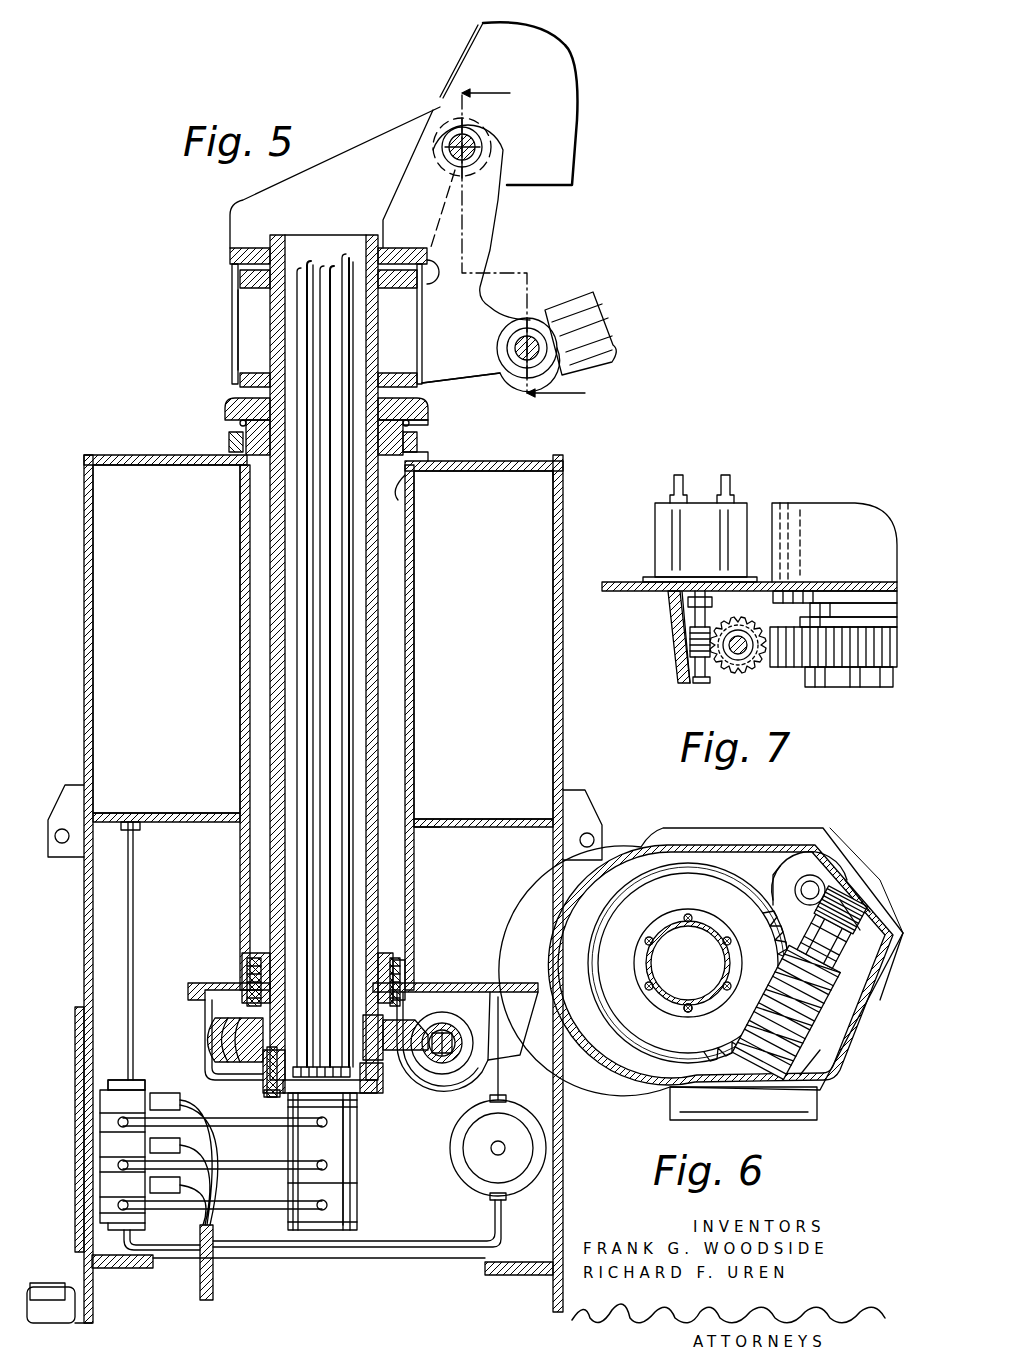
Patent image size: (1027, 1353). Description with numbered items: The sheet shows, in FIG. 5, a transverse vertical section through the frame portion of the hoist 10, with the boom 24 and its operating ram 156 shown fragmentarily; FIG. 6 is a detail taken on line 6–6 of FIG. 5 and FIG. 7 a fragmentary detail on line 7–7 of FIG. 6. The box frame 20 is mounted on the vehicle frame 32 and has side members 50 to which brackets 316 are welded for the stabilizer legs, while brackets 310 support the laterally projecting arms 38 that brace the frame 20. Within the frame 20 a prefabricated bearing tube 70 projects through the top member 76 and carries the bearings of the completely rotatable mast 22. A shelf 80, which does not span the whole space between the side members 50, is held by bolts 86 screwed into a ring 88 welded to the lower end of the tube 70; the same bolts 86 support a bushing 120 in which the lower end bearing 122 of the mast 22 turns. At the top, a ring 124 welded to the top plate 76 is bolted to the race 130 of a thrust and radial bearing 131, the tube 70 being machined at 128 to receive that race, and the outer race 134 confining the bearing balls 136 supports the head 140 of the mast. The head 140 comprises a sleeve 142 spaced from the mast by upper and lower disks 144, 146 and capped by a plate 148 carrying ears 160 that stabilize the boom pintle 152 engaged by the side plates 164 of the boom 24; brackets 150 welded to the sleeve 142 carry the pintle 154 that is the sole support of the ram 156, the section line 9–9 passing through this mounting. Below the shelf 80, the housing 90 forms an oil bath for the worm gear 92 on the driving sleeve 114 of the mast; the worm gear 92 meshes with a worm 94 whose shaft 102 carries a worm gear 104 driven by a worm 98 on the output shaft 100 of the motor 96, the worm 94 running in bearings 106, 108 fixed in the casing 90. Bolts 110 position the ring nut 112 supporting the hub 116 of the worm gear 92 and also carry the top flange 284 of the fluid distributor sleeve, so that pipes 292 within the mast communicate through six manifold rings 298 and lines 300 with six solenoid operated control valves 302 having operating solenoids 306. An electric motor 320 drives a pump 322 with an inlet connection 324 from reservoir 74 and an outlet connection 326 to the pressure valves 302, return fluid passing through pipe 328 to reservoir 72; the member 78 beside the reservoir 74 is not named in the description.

In FIG. 5, the actuator assembly 10 is at (330, 932).
In FIG. 5, the box frame 20 is at (565, 495).
In FIG. 5, the mast 22 is at (232, 335).
In FIG. 5, the boom 24 is at (572, 62).
In FIG. 5, the vehicle frame 32 is at (80, 1310).
In FIG. 5, the lateral arms 38 is at (35, 1287).
In FIG. 5, the side members 50 is at (84, 672).
In FIG. 5, the bearing tube 70 is at (414, 778).
In FIG. 7, the bearing tube 70 is at (785, 508).
In FIG. 5, the reservoir 72 is at (170, 546).
In FIG. 5, the reservoir 74 is at (505, 546).
In FIG. 5, the top member 76 is at (502, 475).
In FIG. 5, the partition plate 78 is at (440, 824).
In FIG. 5, the shelf 80 is at (487, 983).
In FIG. 7, the shelf 80 is at (630, 591).
In FIG. 6, the shelf 80 is at (628, 845).
In FIG. 5, the bolts 86 is at (405, 978).
In FIG. 5, the ring 88 is at (398, 965).
In FIG. 5, the housing 90 is at (450, 1092).
In FIG. 6, the housing 90 is at (705, 1060).
In FIG. 5, the worm gear 92 is at (225, 1035).
In FIG. 7, the worm gear 92 is at (868, 660).
In FIG. 6, the worm gear 92 is at (690, 1042).
In FIG. 5, the worm 94 is at (452, 1028).
In FIG. 6, the worm 94 is at (835, 1028).
In FIG. 7, the motor 96 is at (665, 535).
In FIG. 6, the motor 96 is at (810, 880).
In FIG. 7, the worm 98 is at (690, 640).
In FIG. 6, the worm 98 is at (850, 895).
In FIG. 7, the motor output shaft 100 is at (678, 672).
In FIG. 5, the shaft 102 is at (442, 1035).
In FIG. 7, the shaft 102 is at (738, 661).
In FIG. 6, the shaft 102 is at (743, 1103).
In FIG. 7, the worm gear 104 is at (760, 668).
In FIG. 6, the worm gear 104 is at (868, 900).
In FIG. 6, the bearing 106 is at (835, 945).
In FIG. 6, the bearing 108 is at (820, 860).
In FIG. 5, the bolts 110 is at (267, 1088).
In FIG. 6, the bolts 110 is at (712, 1010).
In FIG. 5, the ring nut 112 is at (362, 1093).
In FIG. 5, the driving sleeve 114 is at (250, 1012).
In FIG. 6, the driving sleeve 114 is at (716, 950).
In FIG. 5, the hub 116 is at (410, 1027).
In FIG. 6, the hub 116 is at (740, 960).
In FIG. 5, the bushing 120 is at (242, 960).
In FIG. 5, the lower end bearing 122 is at (256, 958).
In FIG. 5, the ring 124 is at (428, 454).
In FIG. 5, the machined portion 128 is at (414, 498).
In FIG. 5, the race 130 is at (428, 422).
In FIG. 5, the thrust and radial bearing 131 is at (215, 431).
In FIG. 5, the outer bearing race 134 is at (225, 410).
In FIG. 5, the bearing balls 136 is at (229, 440).
In FIG. 5, the head 140 is at (240, 378).
In FIG. 5, the sleeve 142 is at (468, 390).
In FIG. 5, the upper disk 144 is at (240, 280).
In FIG. 5, the lower disk 146 is at (240, 355).
In FIG. 5, the plate 148 is at (230, 256).
In FIG. 5, the brackets 150 is at (492, 222).
In FIG. 5, the boom pintle 152 is at (470, 147).
In FIG. 5, the pintle 154 is at (535, 340).
In FIG. 5, the ram 156 is at (595, 320).
In FIG. 5, the ears 160 is at (303, 200).
In FIG. 5, the side plates 164 is at (575, 183).
In FIG. 5, the top flange 284 is at (355, 1115).
In FIG. 5, the pipes 292 is at (335, 640).
In FIG. 5, the rings 298 is at (357, 1170).
In FIG. 5, the fluid pressure or relief line 300 is at (280, 1195).
In FIG. 5, the solenoid operated control valves 302 is at (112, 1170).
In FIG. 5, the valve operating solenoids 306 is at (196, 1250).
In FIG. 5, the brackets 310 is at (65, 1296).
In FIG. 5, the brackets 316 is at (52, 812).
In FIG. 5, the electric motor 320 is at (540, 1178).
In FIG. 5, the pump 322 is at (530, 1160).
In FIG. 5, the inlet connection 324 is at (538, 983).
In FIG. 5, the outlet connection 326 is at (357, 1223).
In FIG. 5, the pipe 328 is at (135, 866).
In FIG. 5, the section line 6– 6 is at (215, 1072).
In FIG. 6, the section line 7– 7 is at (888, 935).
In FIG. 5, the section line 9– 9 is at (541, 241).